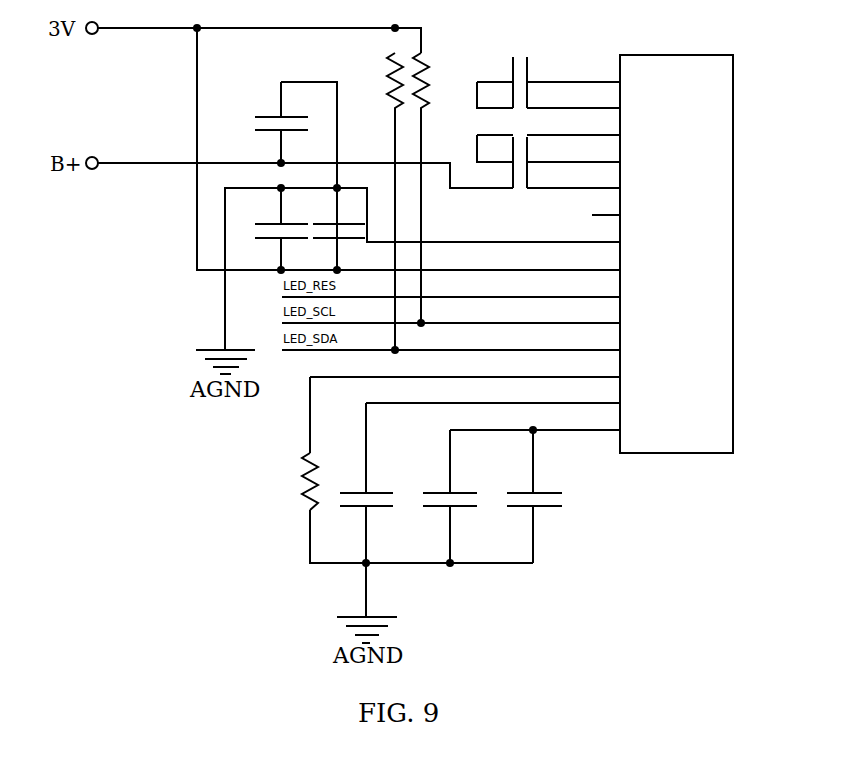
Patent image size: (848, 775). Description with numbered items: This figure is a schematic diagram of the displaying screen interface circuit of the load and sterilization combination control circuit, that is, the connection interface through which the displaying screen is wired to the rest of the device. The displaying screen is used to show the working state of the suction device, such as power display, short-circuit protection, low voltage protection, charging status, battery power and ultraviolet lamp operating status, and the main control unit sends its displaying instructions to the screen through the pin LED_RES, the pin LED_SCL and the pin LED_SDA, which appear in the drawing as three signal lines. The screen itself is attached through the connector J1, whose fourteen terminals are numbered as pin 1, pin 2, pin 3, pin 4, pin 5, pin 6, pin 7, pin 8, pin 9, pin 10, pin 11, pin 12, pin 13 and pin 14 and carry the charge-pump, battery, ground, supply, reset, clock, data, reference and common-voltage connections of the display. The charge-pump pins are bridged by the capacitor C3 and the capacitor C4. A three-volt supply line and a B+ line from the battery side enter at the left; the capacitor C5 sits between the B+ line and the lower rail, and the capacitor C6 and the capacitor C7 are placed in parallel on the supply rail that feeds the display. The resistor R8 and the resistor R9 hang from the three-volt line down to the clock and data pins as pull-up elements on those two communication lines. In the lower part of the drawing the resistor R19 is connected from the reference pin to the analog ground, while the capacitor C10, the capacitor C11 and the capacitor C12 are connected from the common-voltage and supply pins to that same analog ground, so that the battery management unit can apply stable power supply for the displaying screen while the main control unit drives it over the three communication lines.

The capacitor C3 (105) C3 is at (548, 82).
The capacitor C4 (105) C4 is at (548, 161).
The capacitor C5 (104) C5 is at (281, 119).
The capacitor C6 (475) C6 is at (281, 228).
The capacitor C7 (104) C7 is at (339, 228).
The resistor R8 (4.7K) R8 is at (377, 195).
The resistor R9 (4.7K) R9 is at (432, 181).
The resistor R19 (510KF) R19 is at (327, 458).
The capacitor C10 (225) C10 is at (367, 495).
The capacitor C11 (475) C11 is at (450, 495).
The capacitor C12 (104) C12 is at (534, 495).
The OLED9632 display connector J1 is at (654, 278).
The pin 1 C2P 1 is at (603, 69).
The pin 2 C2N 2 is at (603, 95).
The pin 3 C1P 3 is at (603, 122).
The pin 4 C1N 4 is at (603, 149).
The pin 5 VBAT 5 is at (603, 175).
The pin 6 NC 6 is at (603, 202).
The pin 7 VSS 7 is at (603, 229).
The pin 8 VDD 8 is at (603, 257).
The pin 9 RES 9 is at (603, 284).
The pin 10 SCL 10 is at (597, 310).
The pin 11 SDA 11 is at (597, 337).
The pin 12 IREF 12 is at (597, 364).
The pin 13 VCOMH 13 is at (597, 390).
The pin 14 VCC 14 is at (597, 417).